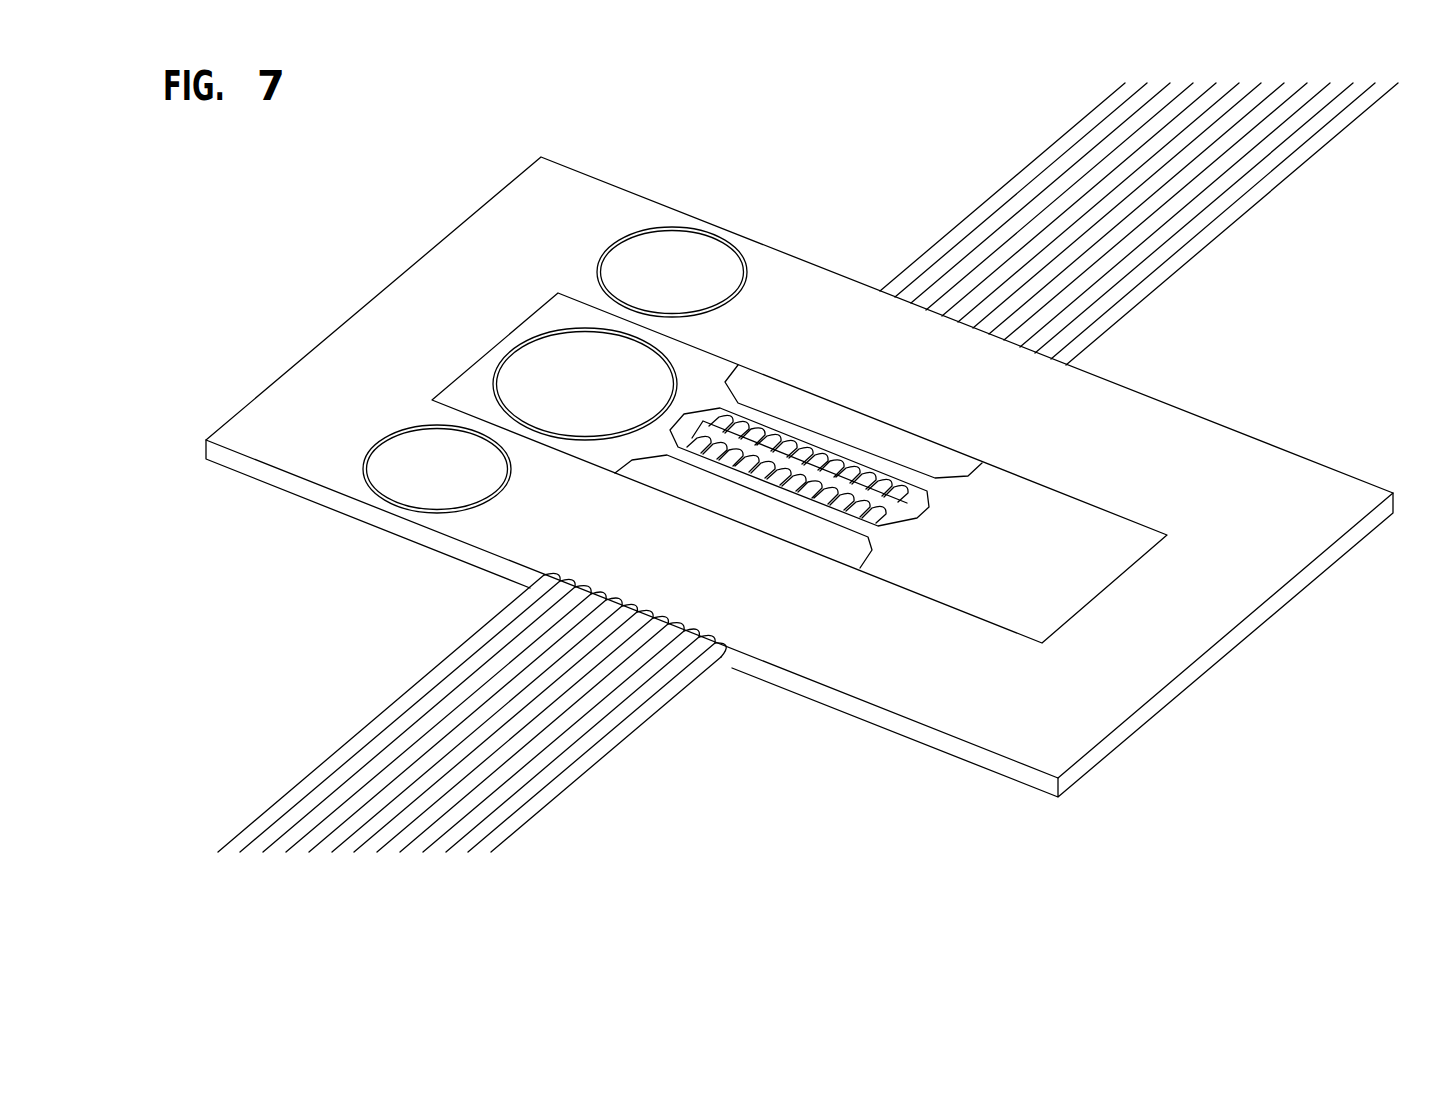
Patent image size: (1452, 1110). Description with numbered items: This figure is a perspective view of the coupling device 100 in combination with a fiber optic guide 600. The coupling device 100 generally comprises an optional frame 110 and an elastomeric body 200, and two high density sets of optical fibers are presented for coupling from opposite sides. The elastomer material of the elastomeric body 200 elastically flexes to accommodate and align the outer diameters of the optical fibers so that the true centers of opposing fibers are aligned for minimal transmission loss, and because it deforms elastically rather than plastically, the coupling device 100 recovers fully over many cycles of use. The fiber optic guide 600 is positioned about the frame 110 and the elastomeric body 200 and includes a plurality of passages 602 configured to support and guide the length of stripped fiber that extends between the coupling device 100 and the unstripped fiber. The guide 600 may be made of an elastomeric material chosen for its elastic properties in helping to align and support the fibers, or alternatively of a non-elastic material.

The fiber optic guide 600 is at (821, 318).
The coupling device 100 is at (928, 442).
The frame 110 is at (1025, 567).
The elastomeric body 200 is at (820, 539).
The passages 602 is at (643, 613).